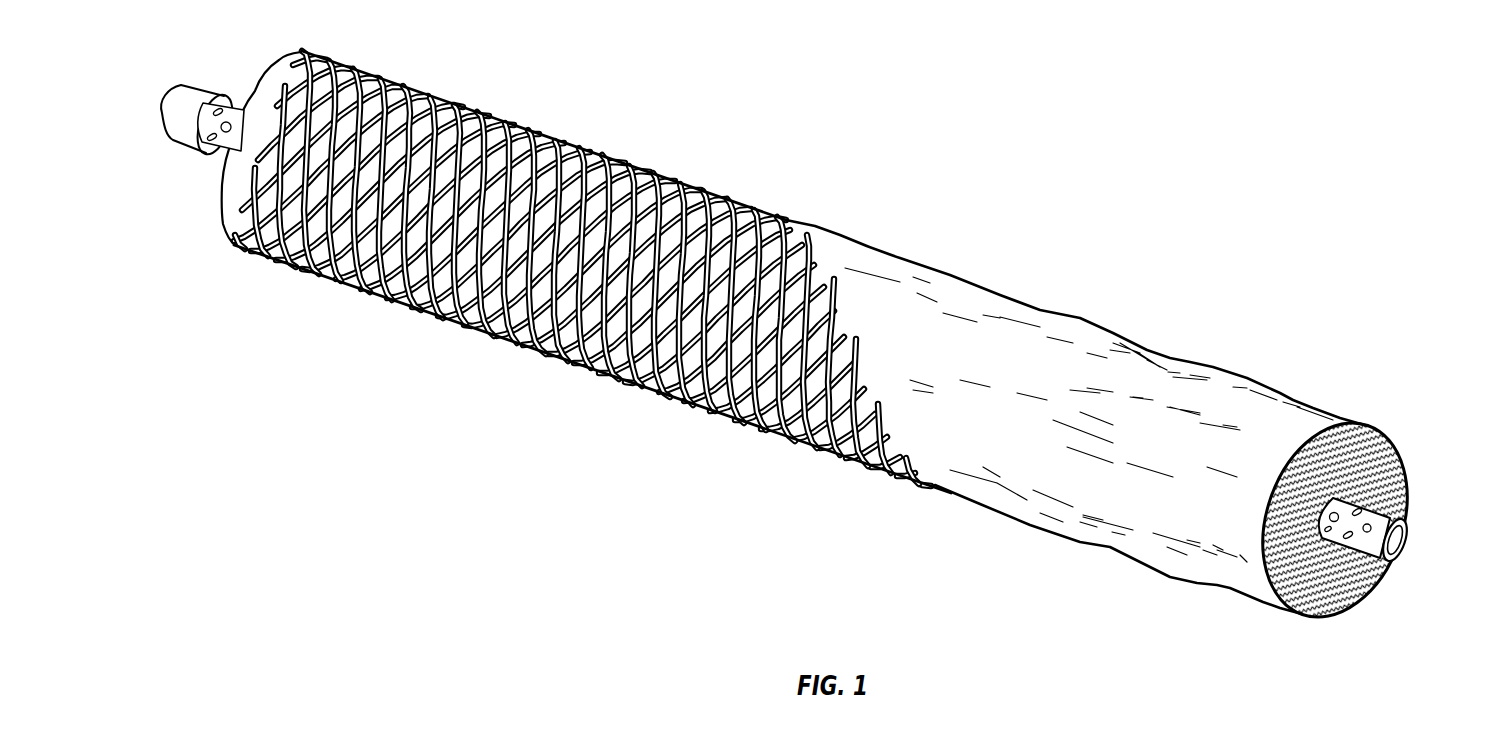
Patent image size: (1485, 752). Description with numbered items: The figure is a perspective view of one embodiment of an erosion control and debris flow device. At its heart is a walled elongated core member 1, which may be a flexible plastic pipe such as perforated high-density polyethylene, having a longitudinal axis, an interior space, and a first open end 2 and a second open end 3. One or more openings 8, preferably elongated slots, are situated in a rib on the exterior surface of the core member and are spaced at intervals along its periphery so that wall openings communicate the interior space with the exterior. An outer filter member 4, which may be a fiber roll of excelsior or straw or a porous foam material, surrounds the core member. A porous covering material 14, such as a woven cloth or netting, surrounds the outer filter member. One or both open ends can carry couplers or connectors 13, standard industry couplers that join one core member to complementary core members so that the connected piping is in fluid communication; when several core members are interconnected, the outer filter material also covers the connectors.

The walled elongated core member 1 is at (1348, 523).
The first open end 2 is at (1400, 547).
The second open end 3 is at (172, 88).
The outer filter member 4 is at (985, 300).
The openings 8 is at (1337, 521).
The couplers or connectors 13 is at (181, 132).
The porous covering material 14 is at (492, 312).